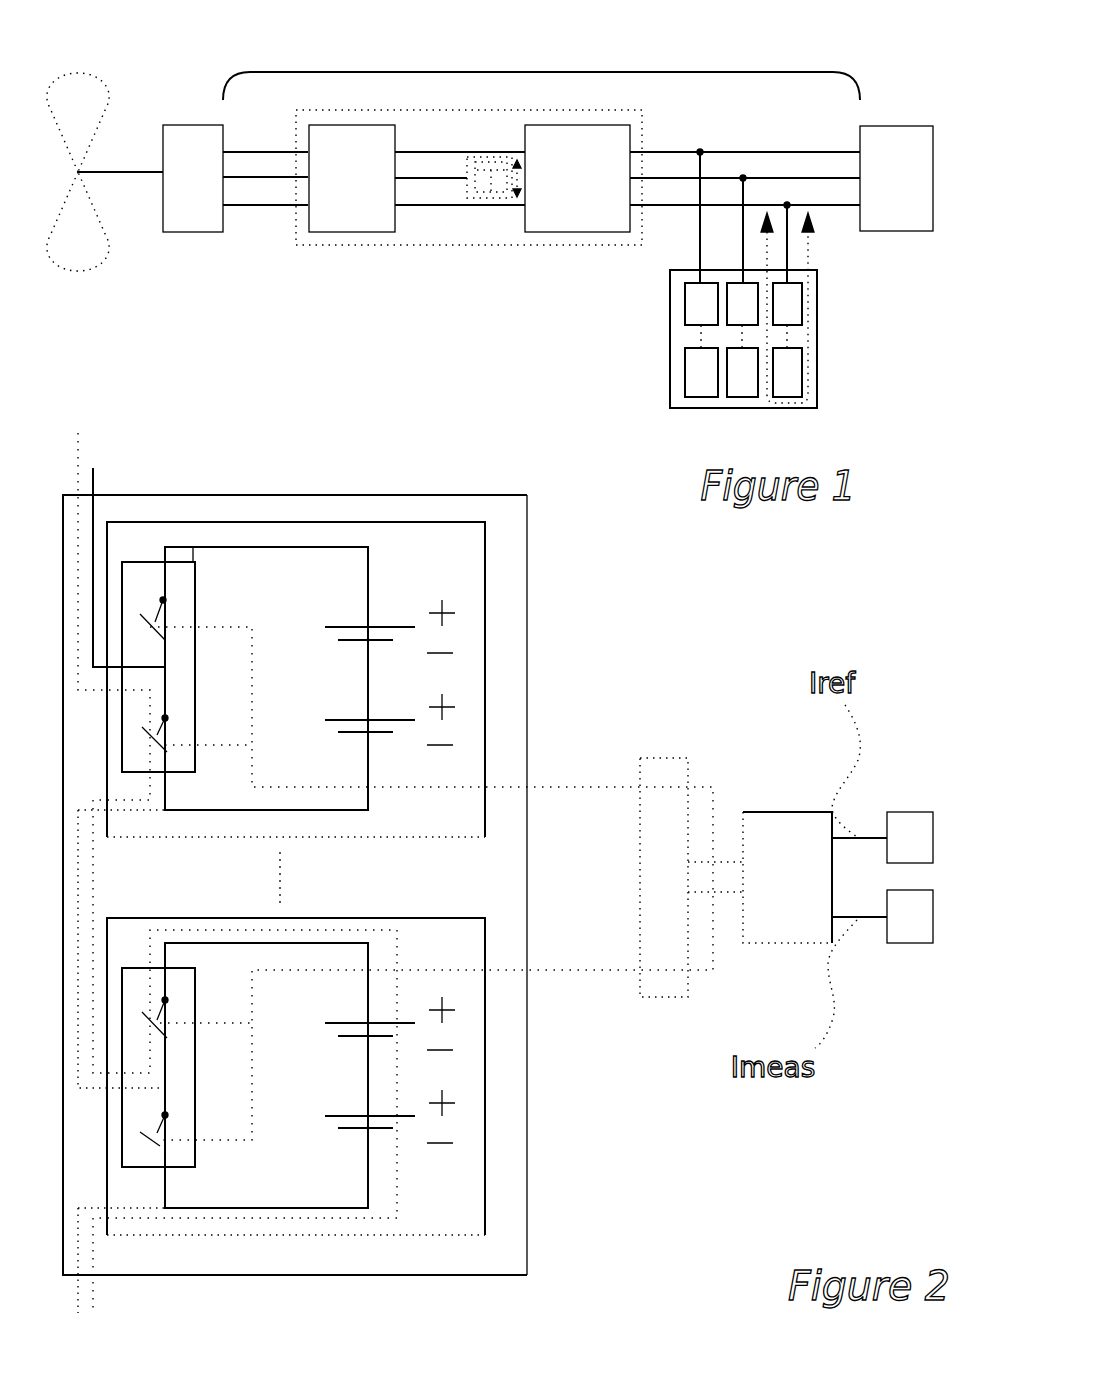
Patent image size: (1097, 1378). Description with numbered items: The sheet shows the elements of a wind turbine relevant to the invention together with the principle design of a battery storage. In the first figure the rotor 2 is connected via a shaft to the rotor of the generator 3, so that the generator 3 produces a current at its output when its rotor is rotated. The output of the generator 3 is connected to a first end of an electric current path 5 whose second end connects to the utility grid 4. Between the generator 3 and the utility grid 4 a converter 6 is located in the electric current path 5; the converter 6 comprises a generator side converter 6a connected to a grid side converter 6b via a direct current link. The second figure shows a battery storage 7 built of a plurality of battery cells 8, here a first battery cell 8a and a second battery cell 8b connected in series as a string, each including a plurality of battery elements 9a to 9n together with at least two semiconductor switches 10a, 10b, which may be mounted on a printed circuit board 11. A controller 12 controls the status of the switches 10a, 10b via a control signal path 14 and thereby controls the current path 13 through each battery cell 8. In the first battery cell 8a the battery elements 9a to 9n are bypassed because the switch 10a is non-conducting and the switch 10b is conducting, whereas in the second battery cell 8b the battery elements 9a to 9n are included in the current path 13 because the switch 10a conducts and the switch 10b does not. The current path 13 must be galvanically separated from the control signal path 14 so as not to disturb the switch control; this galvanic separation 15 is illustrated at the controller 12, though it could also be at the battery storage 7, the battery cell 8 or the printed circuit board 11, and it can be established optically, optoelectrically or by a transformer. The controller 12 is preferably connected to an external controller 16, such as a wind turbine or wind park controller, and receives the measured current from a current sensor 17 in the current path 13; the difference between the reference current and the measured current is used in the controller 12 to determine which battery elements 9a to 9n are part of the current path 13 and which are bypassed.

In FIG. 1, the rotor 2 is at (80, 272).
In FIG. 1, the generator 3 is at (197, 232).
In FIG. 1, the utility grid 4 is at (893, 125).
In FIG. 1, the electric current path 5 is at (592, 72).
In FIG. 1, the converter 6 is at (298, 245).
In FIG. 1, the generator side converter 6a is at (353, 232).
In FIG. 1, the grid side converter 6b is at (578, 232).
In FIG. 1, the battery storage 7 is at (467, 183).
In FIG. 2, the battery storage 7 is at (527, 1255).
In FIG. 1, the battery cell 8 is at (492, 198).
In FIG. 2, the first battery cell 8a is at (485, 560).
In FIG. 2, the second battery cell 8b is at (485, 1192).
In FIG. 2, the battery element 9a is at (415, 633).
In FIG. 2, the battery element 9n is at (400, 718).
In FIG. 2, the semiconductor switch 10a is at (163, 600).
In FIG. 2, the semiconductor switch 10b is at (165, 718).
In FIG. 2, the printed circuit board 11 is at (193, 547).
In FIG. 2, the controller 12 is at (787, 812).
In FIG. 1, the current path 13 is at (528, 194).
In FIG. 2, the current path 13 is at (93, 452).
In FIG. 2, the control signal path 14 is at (613, 785).
In FIG. 2, the galvanic separation 15 is at (673, 997).
In FIG. 2, the external controller 16 is at (913, 807).
In FIG. 2, the current sensor 17 is at (900, 943).